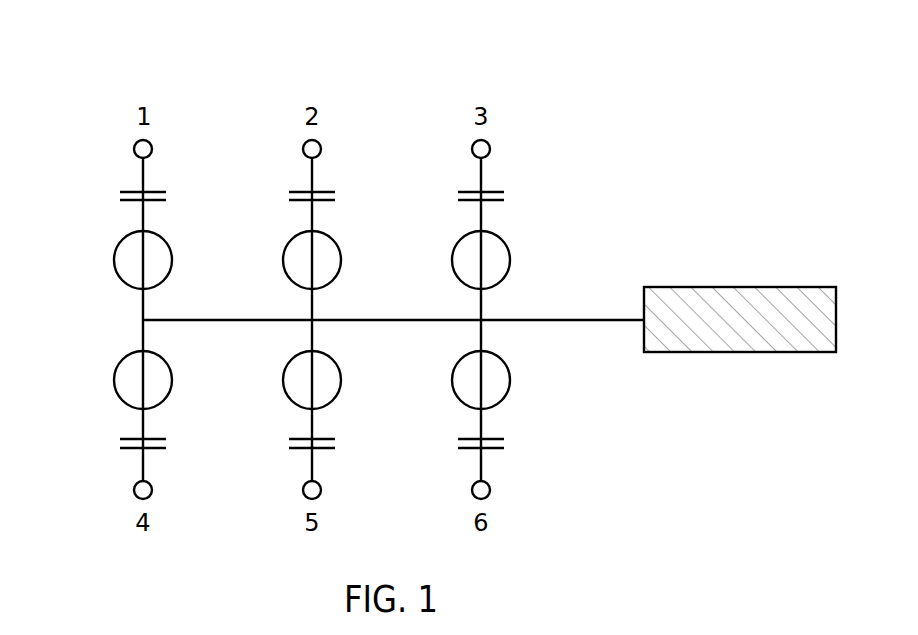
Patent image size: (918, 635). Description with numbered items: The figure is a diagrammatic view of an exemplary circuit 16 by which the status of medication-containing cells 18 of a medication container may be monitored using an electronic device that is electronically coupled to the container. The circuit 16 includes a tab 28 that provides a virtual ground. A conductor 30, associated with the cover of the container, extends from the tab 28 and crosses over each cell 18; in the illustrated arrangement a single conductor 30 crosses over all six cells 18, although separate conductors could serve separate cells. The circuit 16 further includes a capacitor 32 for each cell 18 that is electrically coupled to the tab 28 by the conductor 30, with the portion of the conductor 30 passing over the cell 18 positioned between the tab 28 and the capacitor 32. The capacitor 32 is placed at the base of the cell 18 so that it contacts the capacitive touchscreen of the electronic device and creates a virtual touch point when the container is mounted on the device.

The circuit 16 is at (102, 102).
The medication-containing cell 18 is at (172, 261).
The tab or conductor 28 is at (775, 353).
The conductor 30 is at (596, 320).
The capacitor 32 is at (153, 190).